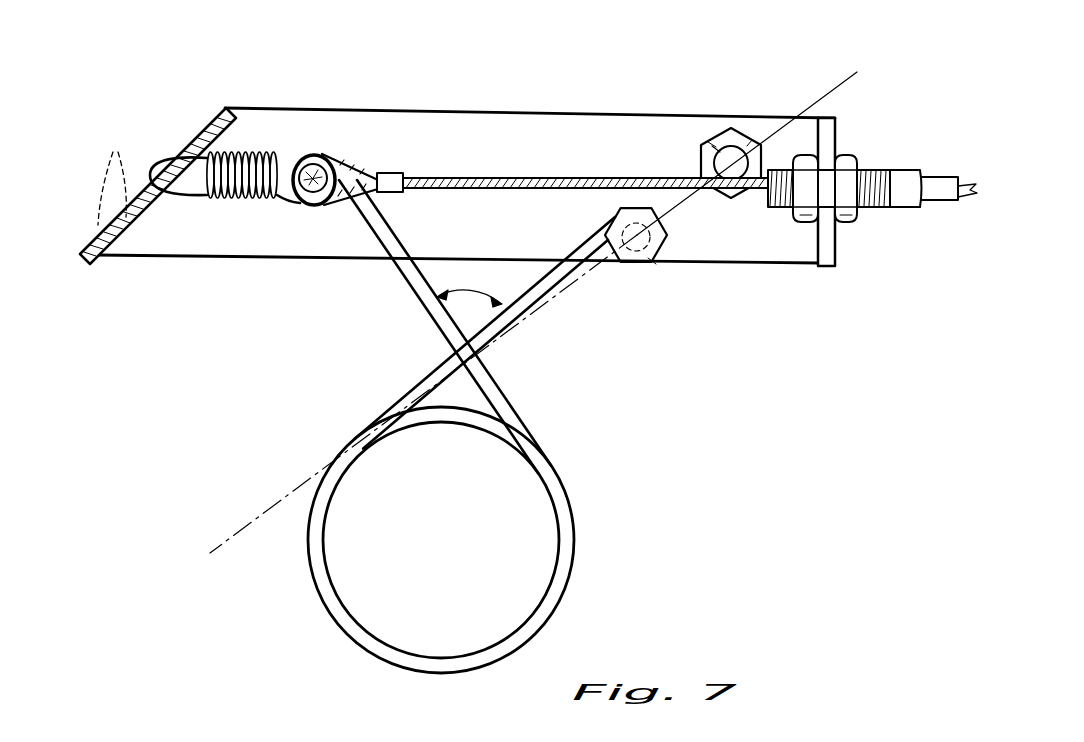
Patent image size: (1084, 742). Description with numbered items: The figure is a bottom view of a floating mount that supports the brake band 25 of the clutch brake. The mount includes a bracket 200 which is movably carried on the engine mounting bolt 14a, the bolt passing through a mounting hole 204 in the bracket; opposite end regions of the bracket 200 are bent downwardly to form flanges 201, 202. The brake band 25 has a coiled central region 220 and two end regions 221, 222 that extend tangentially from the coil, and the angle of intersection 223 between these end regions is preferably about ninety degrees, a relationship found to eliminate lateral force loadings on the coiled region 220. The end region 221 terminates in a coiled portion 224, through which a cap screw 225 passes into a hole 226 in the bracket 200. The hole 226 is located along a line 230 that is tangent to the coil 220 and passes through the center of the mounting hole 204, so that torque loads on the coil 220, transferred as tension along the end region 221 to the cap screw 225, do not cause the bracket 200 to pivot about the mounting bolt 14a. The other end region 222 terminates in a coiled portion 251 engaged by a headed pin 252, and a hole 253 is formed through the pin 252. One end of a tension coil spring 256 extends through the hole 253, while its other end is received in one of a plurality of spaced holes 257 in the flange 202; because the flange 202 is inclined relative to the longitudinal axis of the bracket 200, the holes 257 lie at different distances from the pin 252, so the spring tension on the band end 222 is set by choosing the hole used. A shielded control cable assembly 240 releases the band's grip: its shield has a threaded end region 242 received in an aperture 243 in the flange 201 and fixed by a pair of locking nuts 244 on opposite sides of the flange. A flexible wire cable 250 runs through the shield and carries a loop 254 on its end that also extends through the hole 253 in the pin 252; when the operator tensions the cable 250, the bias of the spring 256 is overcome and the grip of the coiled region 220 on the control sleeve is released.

The bracket 200 is at (556, 109).
The flange 201 is at (836, 147).
The flange 202 is at (198, 137).
The mounting hole 204 is at (744, 136).
The engine mounting bolt 14a is at (713, 143).
The coiled central region 220 is at (563, 533).
The end region 221 is at (525, 302).
The end region 222 is at (409, 283).
The angle of intersection 223 is at (471, 291).
The coiled portion 224 is at (669, 242).
The cap screw 225 is at (640, 263).
The hole 226 is at (658, 264).
The line 230 is at (834, 90).
The shielded control cable assembly 240 is at (903, 170).
The threaded end region 242 is at (878, 208).
The aperture 243 is at (848, 226).
The locking nuts 244 is at (847, 217).
The flexible wire cable 250 is at (508, 178).
The coiled portion 251 is at (284, 203).
The headed pin 252 is at (324, 158).
The hole 253 is at (333, 208).
The loop 254 is at (356, 157).
The tension coil spring 256 is at (236, 200).
The spaced holes 257 is at (120, 177).
The brake band 25 is at (524, 425).